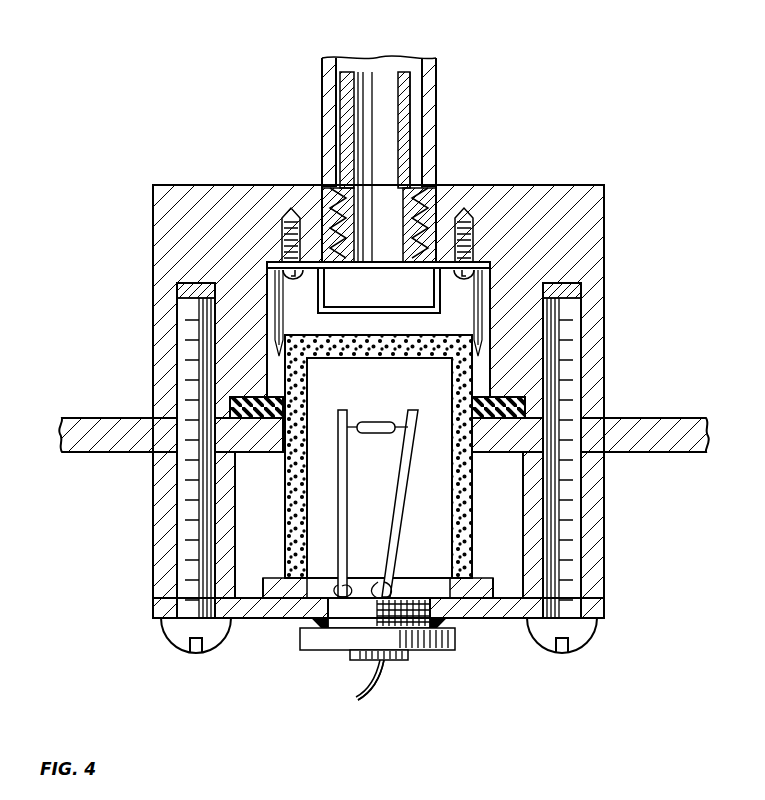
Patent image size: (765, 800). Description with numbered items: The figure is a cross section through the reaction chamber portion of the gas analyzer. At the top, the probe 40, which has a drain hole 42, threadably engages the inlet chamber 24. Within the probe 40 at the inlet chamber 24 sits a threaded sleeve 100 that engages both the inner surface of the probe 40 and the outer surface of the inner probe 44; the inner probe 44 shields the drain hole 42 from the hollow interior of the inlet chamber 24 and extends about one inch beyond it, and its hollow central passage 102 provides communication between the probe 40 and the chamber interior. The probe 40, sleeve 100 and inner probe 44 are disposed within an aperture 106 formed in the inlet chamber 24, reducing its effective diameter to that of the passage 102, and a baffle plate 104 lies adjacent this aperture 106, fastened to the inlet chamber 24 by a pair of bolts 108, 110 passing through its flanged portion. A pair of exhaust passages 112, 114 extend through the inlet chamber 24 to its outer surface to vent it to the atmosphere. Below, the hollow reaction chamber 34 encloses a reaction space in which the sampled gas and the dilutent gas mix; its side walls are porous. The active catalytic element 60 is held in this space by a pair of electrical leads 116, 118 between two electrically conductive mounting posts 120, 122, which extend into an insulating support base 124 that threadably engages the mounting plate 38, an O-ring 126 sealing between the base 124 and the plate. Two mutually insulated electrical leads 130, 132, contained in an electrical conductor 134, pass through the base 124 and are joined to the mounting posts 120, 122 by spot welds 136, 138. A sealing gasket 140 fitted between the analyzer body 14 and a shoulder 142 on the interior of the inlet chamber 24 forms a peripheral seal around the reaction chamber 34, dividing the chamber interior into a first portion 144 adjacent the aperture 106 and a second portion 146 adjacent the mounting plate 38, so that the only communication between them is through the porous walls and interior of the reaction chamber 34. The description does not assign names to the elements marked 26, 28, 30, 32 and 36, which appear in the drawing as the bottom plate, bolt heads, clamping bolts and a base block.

The analyzer body 14 is at (688, 418).
The inlet chamber 24 is at (568, 200).
The bottom plate 26 is at (600, 632).
The bolt head 28 is at (165, 648).
The right clamping bolt 30 is at (604, 548).
The left clamping bolt 32 is at (152, 553).
The reaction chamber 34 is at (470, 487).
The left base block 36 is at (485, 578).
The mounting plate 38 is at (510, 620).
The probe 40 is at (436, 68).
The drain hole 42 is at (432, 135).
The inner probe 44 is at (347, 80).
The active catalytic element 60 is at (378, 423).
The threaded sleeve 100 is at (410, 186).
The hollow central passage 102 is at (378, 96).
The baffle plate 104 is at (300, 308).
The aperture 106 is at (372, 272).
The bolt 108 is at (476, 232).
The bolt 110 is at (290, 225).
The exhaust passage 112 is at (480, 313).
The exhaust passage 114 is at (275, 298).
The electrical lead 116 is at (400, 434).
The electrical lead 118 is at (348, 426).
The electrically conductive mounting post 120 is at (405, 488).
The electrically conductive mounting post 122 is at (372, 512).
The insulating support base 124 is at (452, 652).
The O-ring 126 is at (312, 627).
The electrical lead 130 is at (368, 706).
The electrical lead 132 is at (352, 698).
The electrical conductor 134 is at (380, 656).
The spot weld 136 is at (390, 570).
The spot weld 138 is at (350, 580).
The sealing gasket 140 is at (262, 456).
The shoulder 142 is at (240, 396).
The first portion 144 is at (452, 300).
The second portion 146 is at (495, 498).